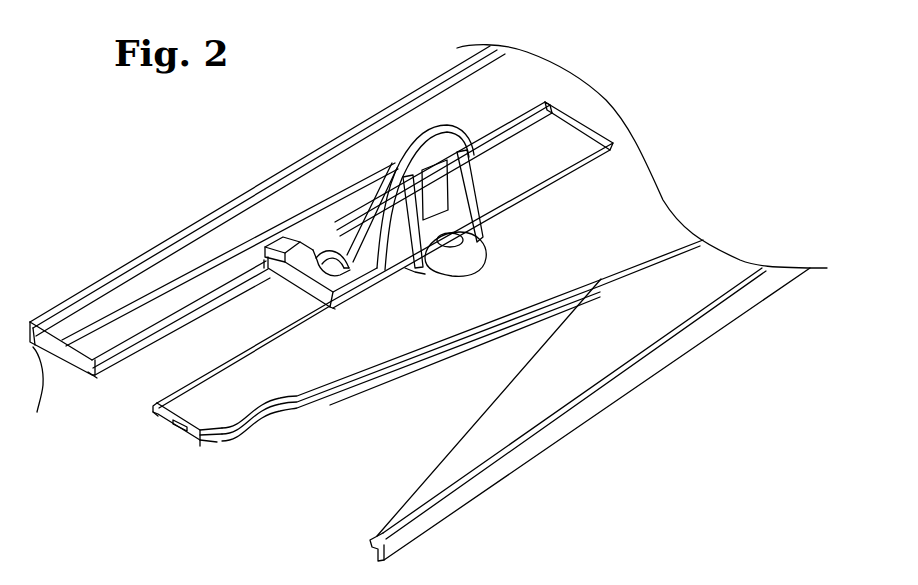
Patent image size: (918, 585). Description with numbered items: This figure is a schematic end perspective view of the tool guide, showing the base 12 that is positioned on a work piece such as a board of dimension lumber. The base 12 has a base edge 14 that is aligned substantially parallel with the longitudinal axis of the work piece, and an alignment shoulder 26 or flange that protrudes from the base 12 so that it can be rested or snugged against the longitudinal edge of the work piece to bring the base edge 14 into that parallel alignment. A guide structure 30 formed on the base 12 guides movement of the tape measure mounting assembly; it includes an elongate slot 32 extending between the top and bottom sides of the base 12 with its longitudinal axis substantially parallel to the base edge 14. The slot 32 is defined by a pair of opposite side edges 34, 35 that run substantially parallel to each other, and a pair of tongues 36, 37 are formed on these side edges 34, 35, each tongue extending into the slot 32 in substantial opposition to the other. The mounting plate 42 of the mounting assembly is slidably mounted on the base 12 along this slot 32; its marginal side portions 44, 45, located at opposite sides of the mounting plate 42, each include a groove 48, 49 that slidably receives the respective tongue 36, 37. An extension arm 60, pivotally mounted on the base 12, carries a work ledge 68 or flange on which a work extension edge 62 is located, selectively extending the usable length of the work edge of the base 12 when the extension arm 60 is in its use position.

The base 12 is at (217, 245).
The base edge 14 is at (25, 393).
The alignment shoulder 26 is at (138, 263).
The guide structure 30 is at (176, 361).
The slot 32 is at (256, 317).
The side edge 34 is at (107, 347).
The side edge 35 is at (177, 421).
The tongue 36 is at (85, 375).
The tongue 37 is at (153, 405).
The mounting plate 42 is at (318, 252).
The marginal side portion 44 is at (258, 247).
The marginal side portion 45 is at (333, 307).
The groove 48 is at (262, 266).
The groove 49 is at (332, 309).
The extension arm 60 is at (560, 383).
The work extension edge 62 is at (523, 452).
The work ledge 68 is at (373, 537).